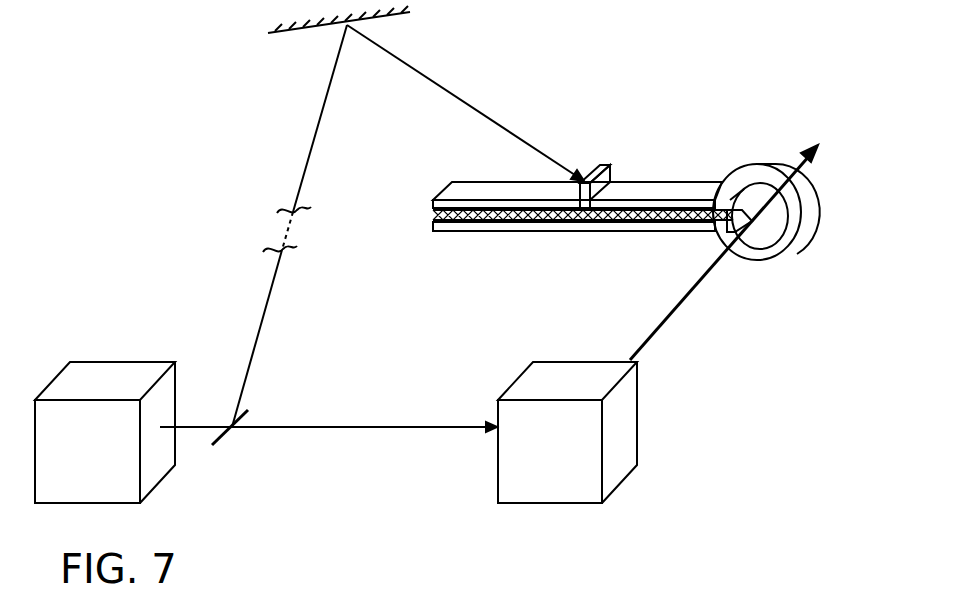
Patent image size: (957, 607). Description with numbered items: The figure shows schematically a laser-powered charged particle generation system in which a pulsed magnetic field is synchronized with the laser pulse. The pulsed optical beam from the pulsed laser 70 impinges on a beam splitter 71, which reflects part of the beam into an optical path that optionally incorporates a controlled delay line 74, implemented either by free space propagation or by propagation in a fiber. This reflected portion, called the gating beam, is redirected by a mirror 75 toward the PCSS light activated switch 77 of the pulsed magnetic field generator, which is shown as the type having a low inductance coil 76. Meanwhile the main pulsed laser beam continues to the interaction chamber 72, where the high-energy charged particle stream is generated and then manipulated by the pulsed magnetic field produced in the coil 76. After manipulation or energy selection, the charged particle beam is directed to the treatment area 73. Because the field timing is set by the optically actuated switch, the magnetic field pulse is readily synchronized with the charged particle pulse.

The pulsed laser 70 is at (115, 362).
The beam splitter 71 is at (218, 438).
The interaction chamber 72 is at (577, 361).
The treatment area 73 is at (732, 241).
The controlled delay line 74 is at (285, 228).
The mirror 75 is at (293, 30).
The low inductance coil 76 is at (756, 161).
The PCSS light activated switch 77 is at (600, 165).